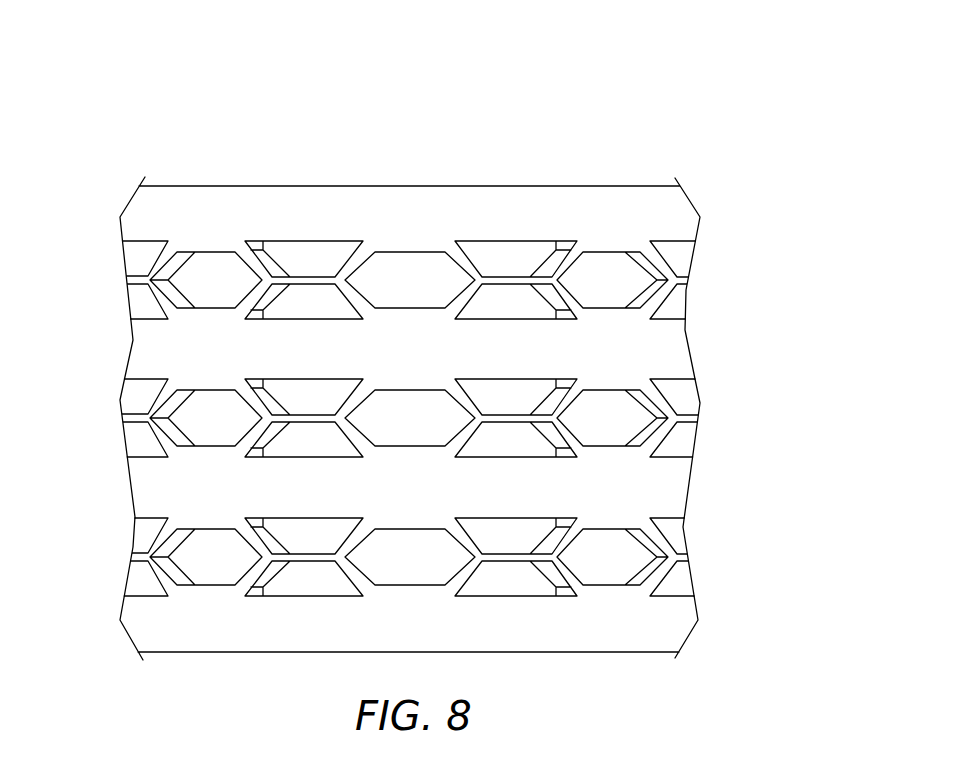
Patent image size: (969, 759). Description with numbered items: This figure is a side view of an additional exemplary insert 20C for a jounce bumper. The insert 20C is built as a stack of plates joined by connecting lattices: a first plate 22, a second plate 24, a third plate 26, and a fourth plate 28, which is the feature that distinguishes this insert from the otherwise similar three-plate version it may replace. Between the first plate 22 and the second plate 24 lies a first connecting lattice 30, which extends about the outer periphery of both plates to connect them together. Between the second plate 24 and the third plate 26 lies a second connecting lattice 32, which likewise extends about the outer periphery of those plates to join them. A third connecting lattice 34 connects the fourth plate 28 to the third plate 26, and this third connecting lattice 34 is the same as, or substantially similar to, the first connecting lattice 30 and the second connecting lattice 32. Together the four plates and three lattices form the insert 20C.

The insert 20C is at (163, 123).
The first plate 22 is at (675, 210).
The second plate 24 is at (675, 352).
The third plate 26 is at (673, 485).
The fourth plate 28 is at (667, 625).
The first connecting lattice 30 is at (158, 272).
The second connecting lattice 32 is at (152, 398).
The third connecting lattice 34 is at (150, 579).